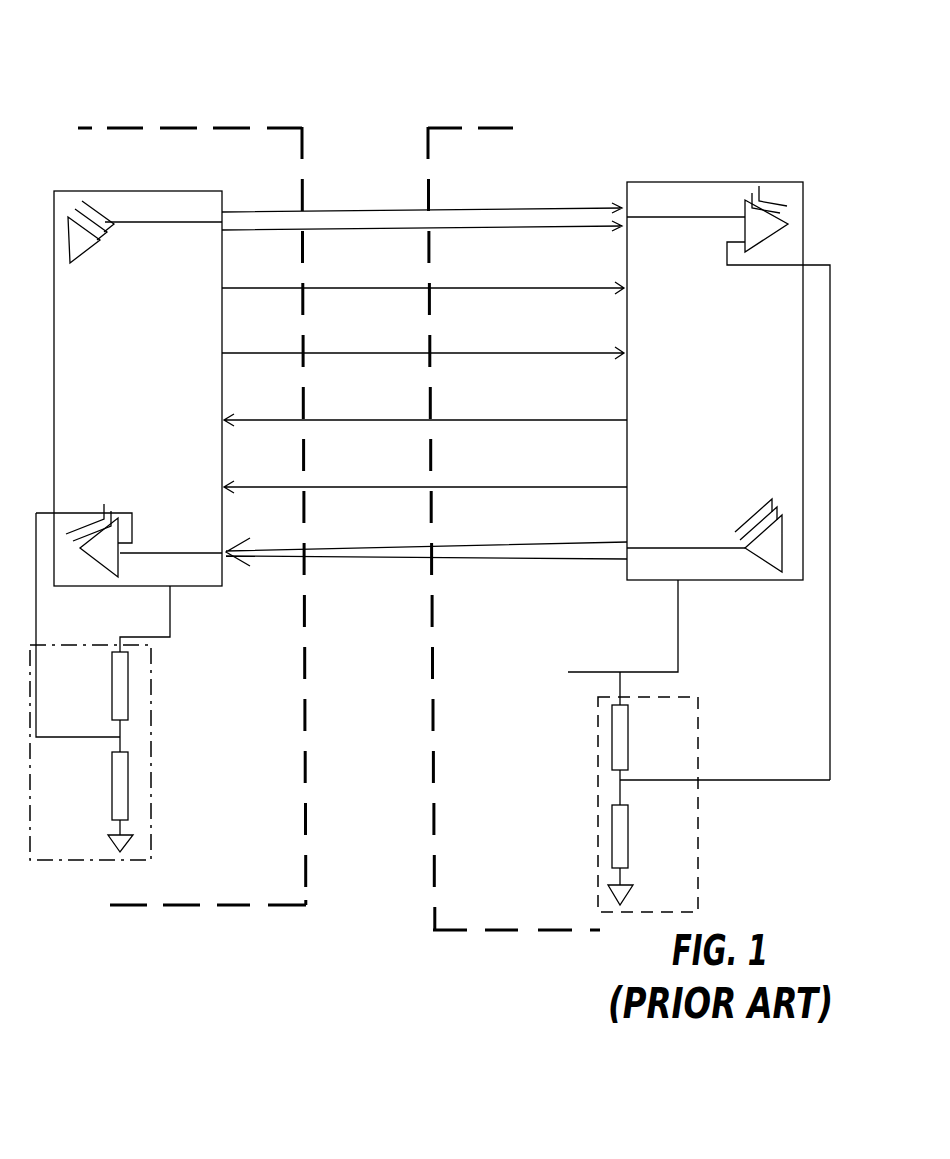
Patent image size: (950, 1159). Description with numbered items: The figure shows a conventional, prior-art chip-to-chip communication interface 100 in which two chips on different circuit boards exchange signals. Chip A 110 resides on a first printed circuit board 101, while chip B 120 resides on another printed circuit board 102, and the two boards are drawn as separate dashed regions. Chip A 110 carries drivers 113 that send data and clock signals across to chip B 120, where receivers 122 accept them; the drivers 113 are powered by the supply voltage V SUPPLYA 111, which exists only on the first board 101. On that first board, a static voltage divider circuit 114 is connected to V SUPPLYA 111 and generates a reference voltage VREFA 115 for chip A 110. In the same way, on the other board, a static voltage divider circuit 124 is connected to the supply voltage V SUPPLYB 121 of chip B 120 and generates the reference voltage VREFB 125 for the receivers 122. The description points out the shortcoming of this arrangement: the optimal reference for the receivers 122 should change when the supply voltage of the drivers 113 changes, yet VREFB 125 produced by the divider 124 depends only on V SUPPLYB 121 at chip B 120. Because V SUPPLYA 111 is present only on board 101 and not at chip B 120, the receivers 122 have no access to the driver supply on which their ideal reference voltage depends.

The chip-to-chip communication interface 100 is at (203, 68).
The first printed circuit board 101 is at (233, 163).
The printed circuit board 102 is at (492, 161).
The chip A 110 is at (72, 192).
The supply voltage V SUPPLYA 111 is at (198, 620).
The drivers 113 is at (91, 272).
The static voltage divider circuit 114 is at (87, 713).
The reference voltage VREFA 115 is at (100, 745).
The chip B 120 is at (792, 580).
The supply voltage V SUPPLYB 121 is at (585, 642).
The receivers 122 is at (710, 238).
The static voltage divider circuit 124 is at (680, 753).
The reference voltage VREFB 125 is at (632, 785).